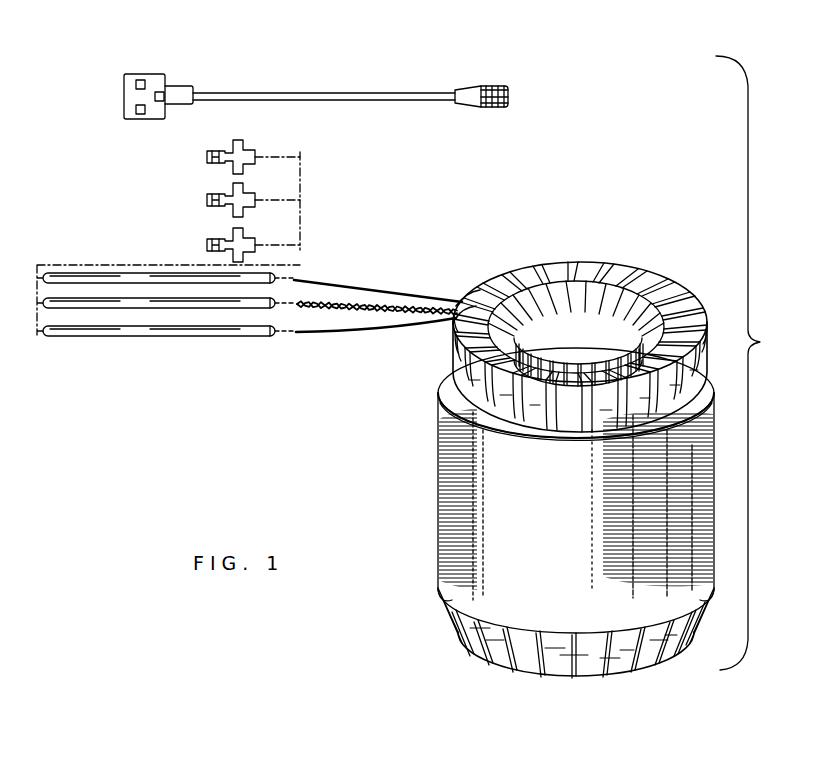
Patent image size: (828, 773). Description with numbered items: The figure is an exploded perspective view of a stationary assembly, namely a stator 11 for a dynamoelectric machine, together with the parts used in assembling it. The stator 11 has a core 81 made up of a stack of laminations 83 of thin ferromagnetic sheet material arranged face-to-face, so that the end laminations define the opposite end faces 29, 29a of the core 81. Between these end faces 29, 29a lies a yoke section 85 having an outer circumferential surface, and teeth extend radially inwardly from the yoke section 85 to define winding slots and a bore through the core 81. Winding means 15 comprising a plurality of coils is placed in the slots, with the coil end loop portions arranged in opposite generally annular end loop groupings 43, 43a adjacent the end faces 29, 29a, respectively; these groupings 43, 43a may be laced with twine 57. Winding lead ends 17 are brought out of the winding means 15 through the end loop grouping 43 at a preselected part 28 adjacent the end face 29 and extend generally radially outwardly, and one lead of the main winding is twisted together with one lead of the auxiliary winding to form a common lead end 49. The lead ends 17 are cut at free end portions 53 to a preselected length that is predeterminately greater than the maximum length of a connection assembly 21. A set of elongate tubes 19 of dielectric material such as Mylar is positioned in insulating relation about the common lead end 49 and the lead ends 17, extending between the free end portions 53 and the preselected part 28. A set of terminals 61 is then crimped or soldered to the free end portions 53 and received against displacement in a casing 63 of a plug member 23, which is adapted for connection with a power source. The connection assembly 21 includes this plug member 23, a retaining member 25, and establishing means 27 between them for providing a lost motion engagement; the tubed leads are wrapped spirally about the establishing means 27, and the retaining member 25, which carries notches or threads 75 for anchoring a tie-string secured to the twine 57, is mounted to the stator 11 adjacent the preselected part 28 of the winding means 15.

The stator 11 is at (568, 391).
The winding means 15 is at (545, 536).
The winding lead ends 17 is at (365, 310).
The elongate tubes 19 is at (118, 343).
The connection assembly 21 is at (317, 73).
The plug member 23 is at (134, 74).
The retaining member 25 is at (506, 85).
The establishing means 27 is at (342, 100).
The preselected part 28 is at (482, 290).
The end face 29 is at (520, 438).
The end face 29a is at (455, 601).
The end loop grouping 43 is at (577, 326).
The end loop grouping 43a is at (555, 677).
The common lead end 49 is at (359, 300).
The free end portions 53 is at (298, 300).
The twine 57 is at (682, 284).
The terminals 61 is at (186, 172).
The casing 63 is at (148, 74).
The threads 75 is at (493, 88).
The core 81 is at (545, 490).
The laminations 83 is at (452, 499).
The yoke section 85 is at (455, 537).